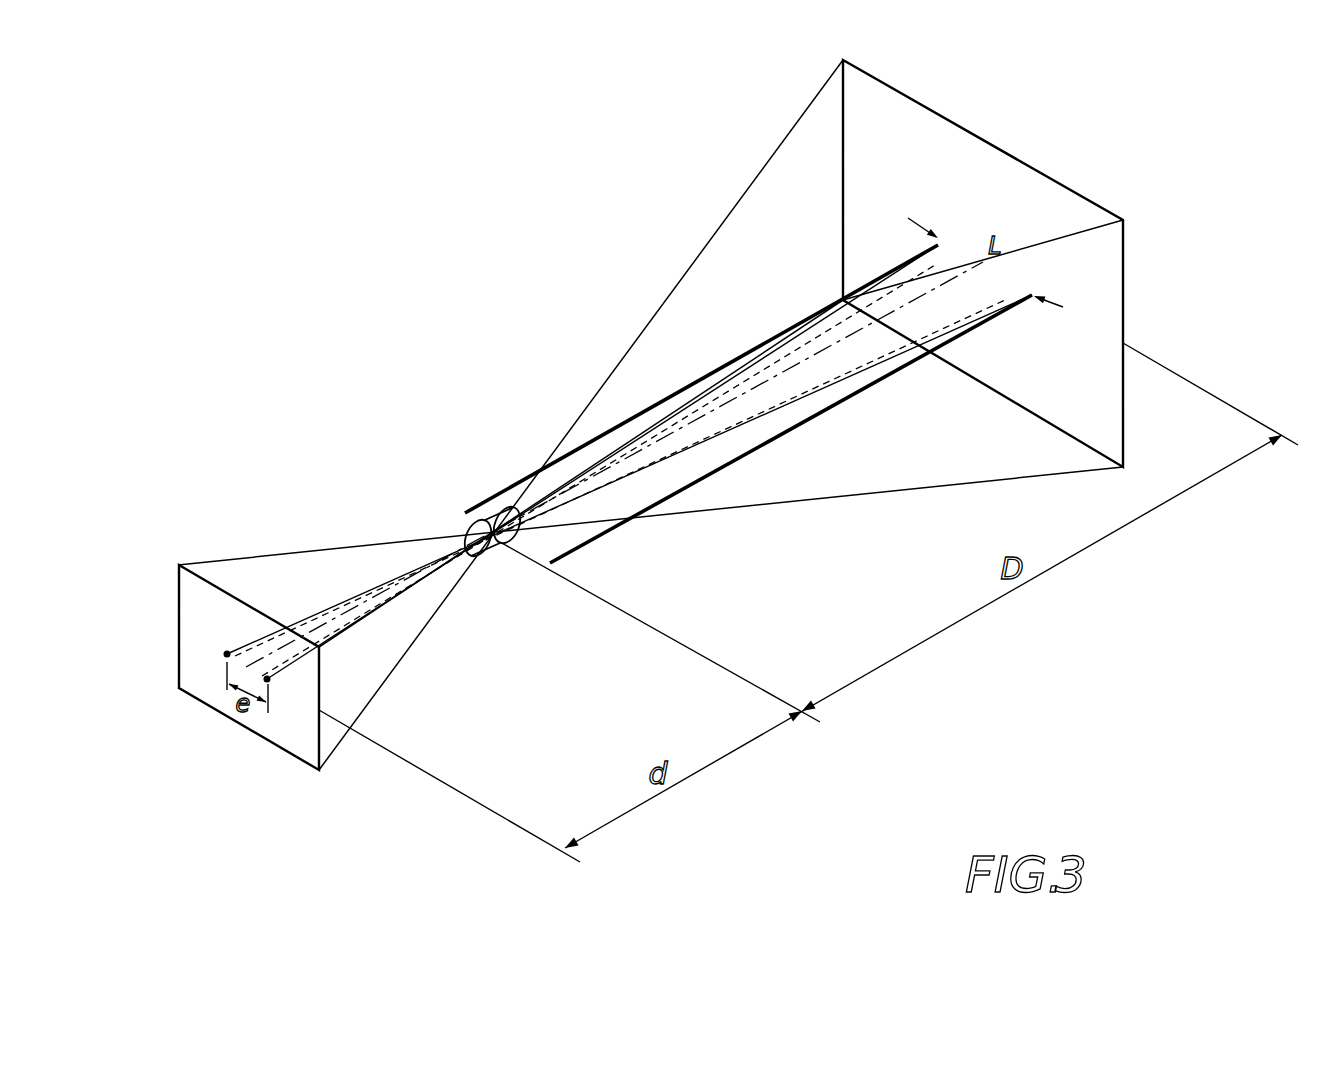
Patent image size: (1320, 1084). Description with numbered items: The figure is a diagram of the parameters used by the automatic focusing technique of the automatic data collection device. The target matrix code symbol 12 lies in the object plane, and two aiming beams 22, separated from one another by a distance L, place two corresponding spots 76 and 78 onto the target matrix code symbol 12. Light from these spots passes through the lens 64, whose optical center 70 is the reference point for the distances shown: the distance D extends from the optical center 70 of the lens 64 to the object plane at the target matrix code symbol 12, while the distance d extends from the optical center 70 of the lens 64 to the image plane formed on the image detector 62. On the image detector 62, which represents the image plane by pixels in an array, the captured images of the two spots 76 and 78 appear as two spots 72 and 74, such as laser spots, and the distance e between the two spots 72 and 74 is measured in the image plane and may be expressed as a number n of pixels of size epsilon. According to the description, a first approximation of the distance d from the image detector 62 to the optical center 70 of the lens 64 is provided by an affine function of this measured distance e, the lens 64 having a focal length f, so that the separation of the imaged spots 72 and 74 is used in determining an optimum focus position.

The target matrix code symbol 12 is at (1070, 187).
The aiming beams 22 is at (725, 368).
The image detector 62 is at (178, 622).
The lens 64 is at (501, 552).
The optical center 70 is at (488, 508).
The spot 72 is at (227, 652).
The spot 74 is at (268, 682).
The spot 76 is at (940, 236).
The spot 78 is at (1036, 280).